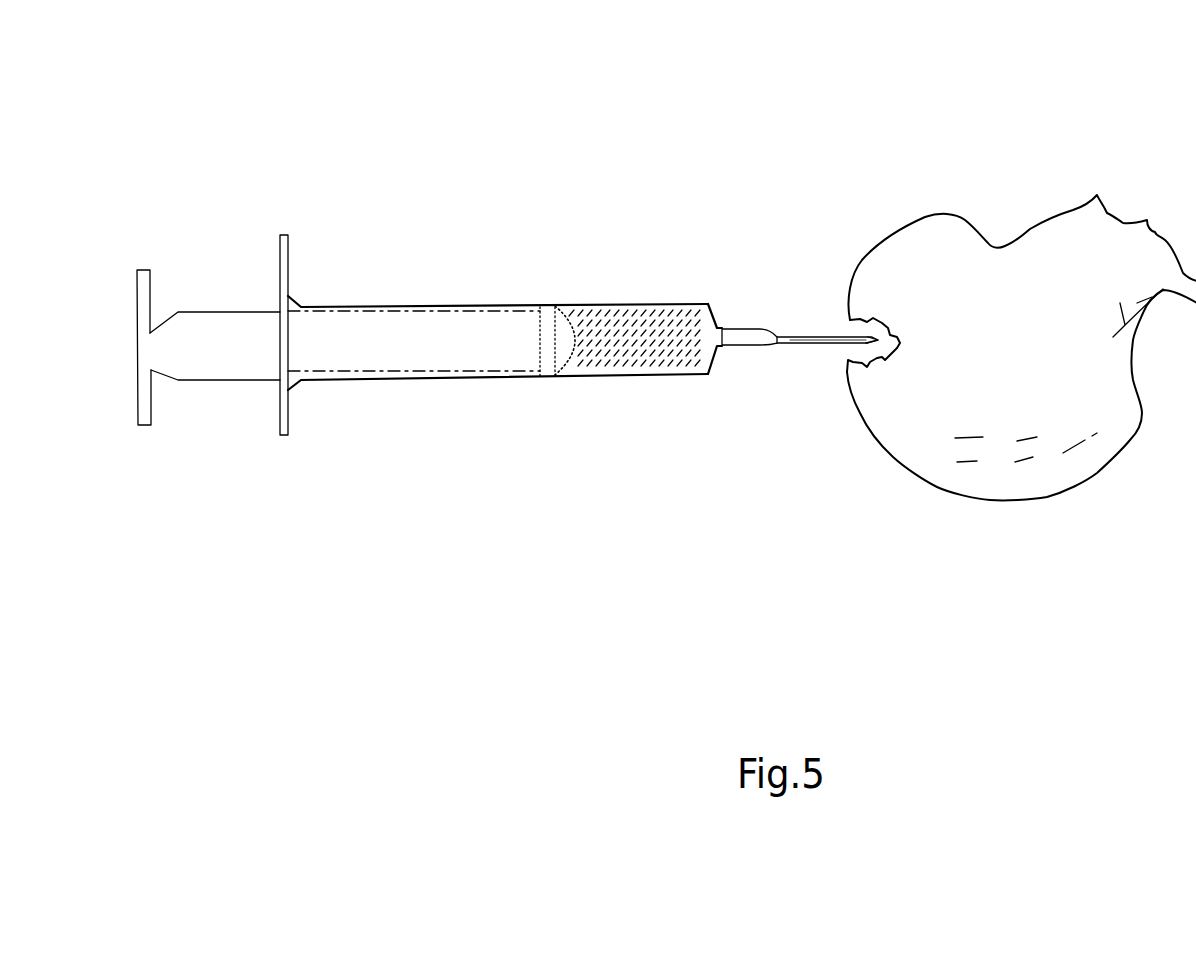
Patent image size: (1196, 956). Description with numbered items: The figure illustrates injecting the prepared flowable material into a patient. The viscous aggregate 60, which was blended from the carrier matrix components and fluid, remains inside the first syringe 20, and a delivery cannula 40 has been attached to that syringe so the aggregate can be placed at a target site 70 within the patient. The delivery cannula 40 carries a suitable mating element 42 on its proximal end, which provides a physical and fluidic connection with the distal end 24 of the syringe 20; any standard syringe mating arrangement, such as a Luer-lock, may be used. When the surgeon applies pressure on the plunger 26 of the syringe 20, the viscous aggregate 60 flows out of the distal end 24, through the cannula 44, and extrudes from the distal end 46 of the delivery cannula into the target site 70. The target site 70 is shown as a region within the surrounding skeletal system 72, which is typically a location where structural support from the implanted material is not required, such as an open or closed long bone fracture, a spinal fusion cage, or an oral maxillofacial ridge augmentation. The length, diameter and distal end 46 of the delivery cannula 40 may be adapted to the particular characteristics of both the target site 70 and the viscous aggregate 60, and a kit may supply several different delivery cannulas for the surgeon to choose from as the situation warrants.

The first syringe 20 is at (423, 245).
The distal end 24 is at (727, 320).
The plunger 26 is at (522, 347).
The delivery cannula 40 is at (788, 377).
The mating element 42 is at (742, 358).
The cannula 44 is at (817, 340).
The distal end 46 is at (893, 348).
The viscous aggregate 60 is at (653, 345).
The target site 70 is at (857, 320).
The skeletal system 72 is at (918, 280).